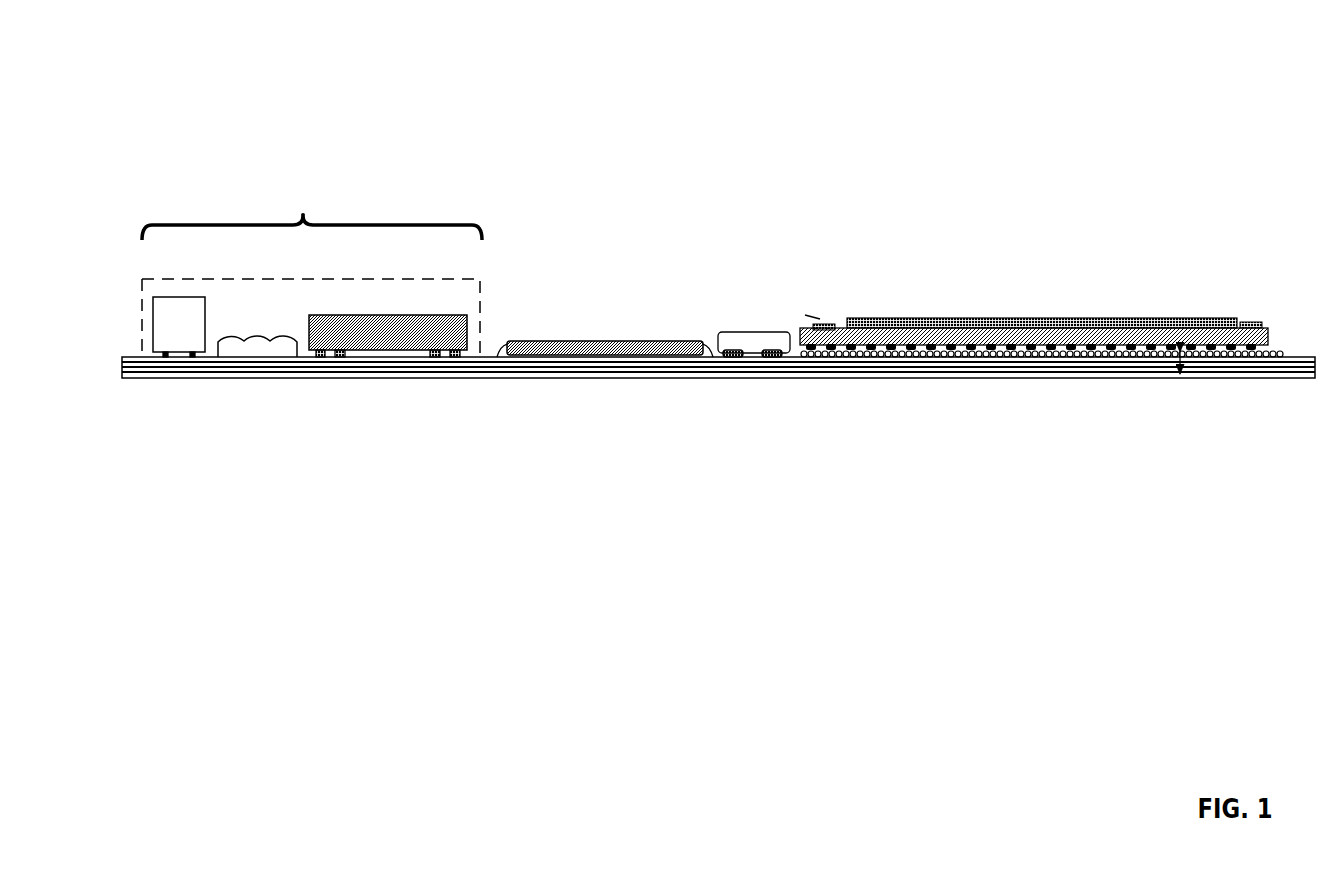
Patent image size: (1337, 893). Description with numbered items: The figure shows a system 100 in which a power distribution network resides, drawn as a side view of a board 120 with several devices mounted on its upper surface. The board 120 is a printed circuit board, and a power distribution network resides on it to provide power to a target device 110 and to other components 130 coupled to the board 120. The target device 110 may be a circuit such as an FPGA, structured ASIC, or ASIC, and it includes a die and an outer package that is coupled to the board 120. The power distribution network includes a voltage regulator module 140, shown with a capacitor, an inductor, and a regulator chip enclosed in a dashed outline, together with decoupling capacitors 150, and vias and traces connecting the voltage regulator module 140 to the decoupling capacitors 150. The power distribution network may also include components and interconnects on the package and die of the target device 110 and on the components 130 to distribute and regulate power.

The system 100 is at (210, 82).
The target device 110 is at (1147, 313).
The board 120 is at (112, 380).
The components 130 is at (603, 335).
The voltage regulator module (VRM) 140 is at (312, 273).
The decoupling capacitors 150 is at (795, 340).